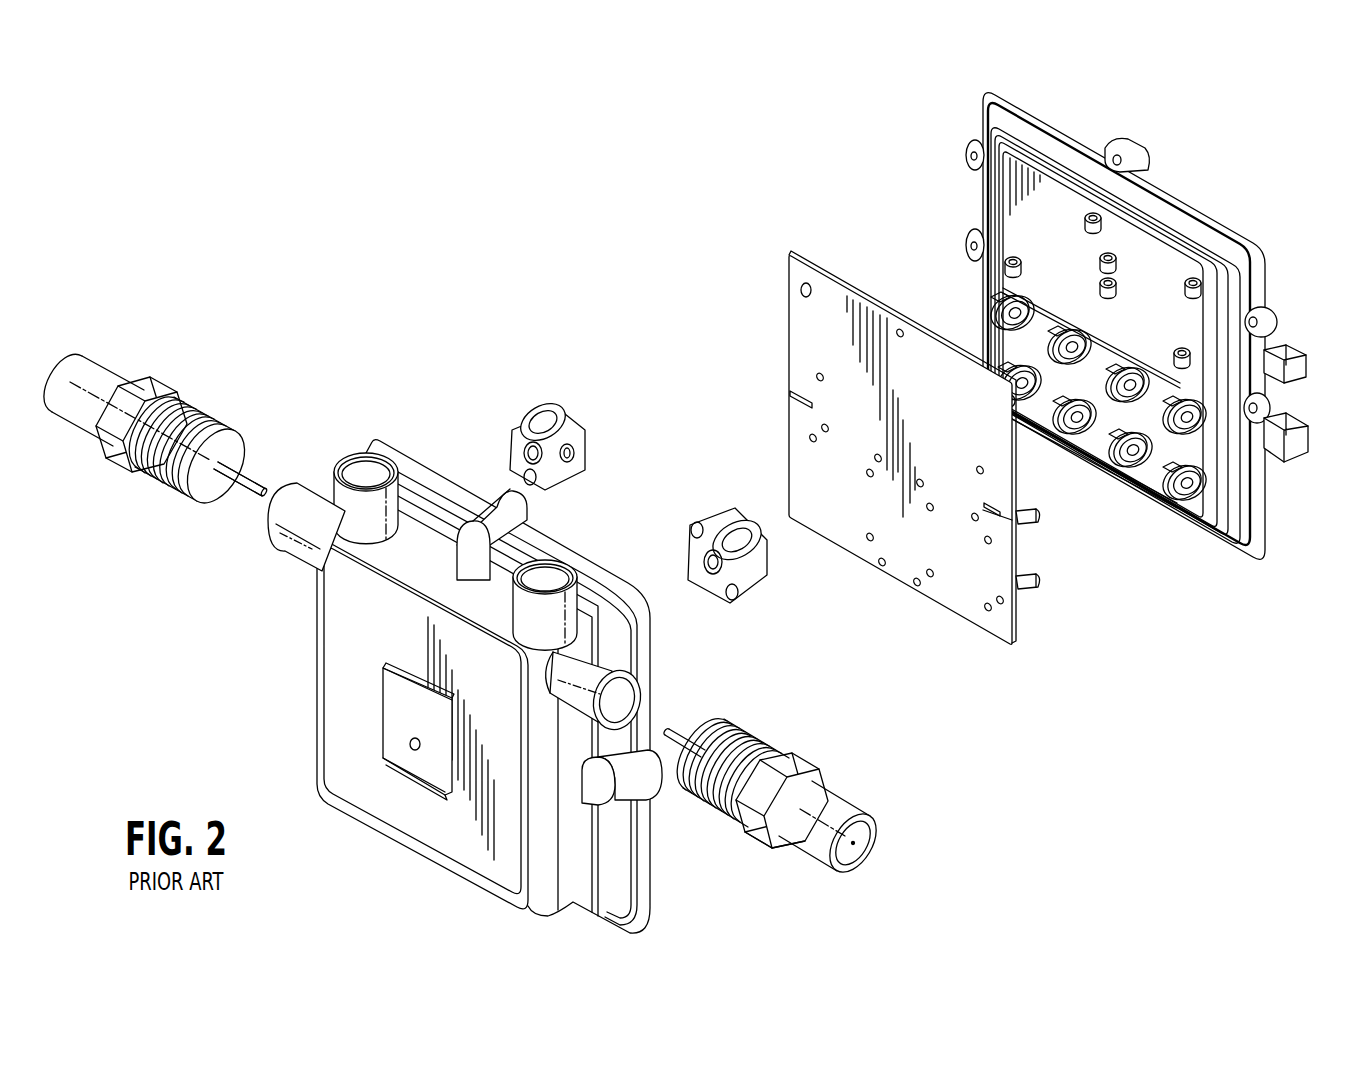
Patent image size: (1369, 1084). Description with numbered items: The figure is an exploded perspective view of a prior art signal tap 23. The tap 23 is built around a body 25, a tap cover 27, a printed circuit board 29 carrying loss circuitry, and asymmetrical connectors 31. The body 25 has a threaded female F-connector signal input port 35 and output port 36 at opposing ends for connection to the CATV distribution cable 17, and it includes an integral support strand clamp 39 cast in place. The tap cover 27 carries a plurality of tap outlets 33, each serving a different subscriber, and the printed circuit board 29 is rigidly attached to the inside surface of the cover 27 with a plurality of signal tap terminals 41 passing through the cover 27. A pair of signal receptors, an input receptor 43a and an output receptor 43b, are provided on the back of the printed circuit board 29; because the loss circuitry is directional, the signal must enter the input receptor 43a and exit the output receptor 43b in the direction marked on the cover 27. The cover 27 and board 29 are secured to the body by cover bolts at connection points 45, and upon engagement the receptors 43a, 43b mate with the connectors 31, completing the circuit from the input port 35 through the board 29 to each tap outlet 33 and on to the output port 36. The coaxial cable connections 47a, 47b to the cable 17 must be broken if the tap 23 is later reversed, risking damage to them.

The CATV distribution cable 17 is at (98, 367).
The signal tap 23 is at (376, 266).
The body 25 is at (377, 442).
The tap cover 27 is at (1017, 150).
The printed circuit board 29 is at (1013, 640).
The asymmetrical connectors 31 is at (522, 420).
The tap outlets 33 is at (1302, 415).
The signal input port 35 is at (604, 647).
The signal output port 36 is at (278, 518).
The support strand clamp 39 is at (405, 742).
The signal tap terminals 41 is at (1040, 580).
The input receptor 43a is at (1012, 405).
The output receptor 43b is at (800, 292).
The connection points 45 is at (972, 152).
The coaxial cable connection 47a is at (777, 850).
The coaxial cable connection 47b is at (248, 487).